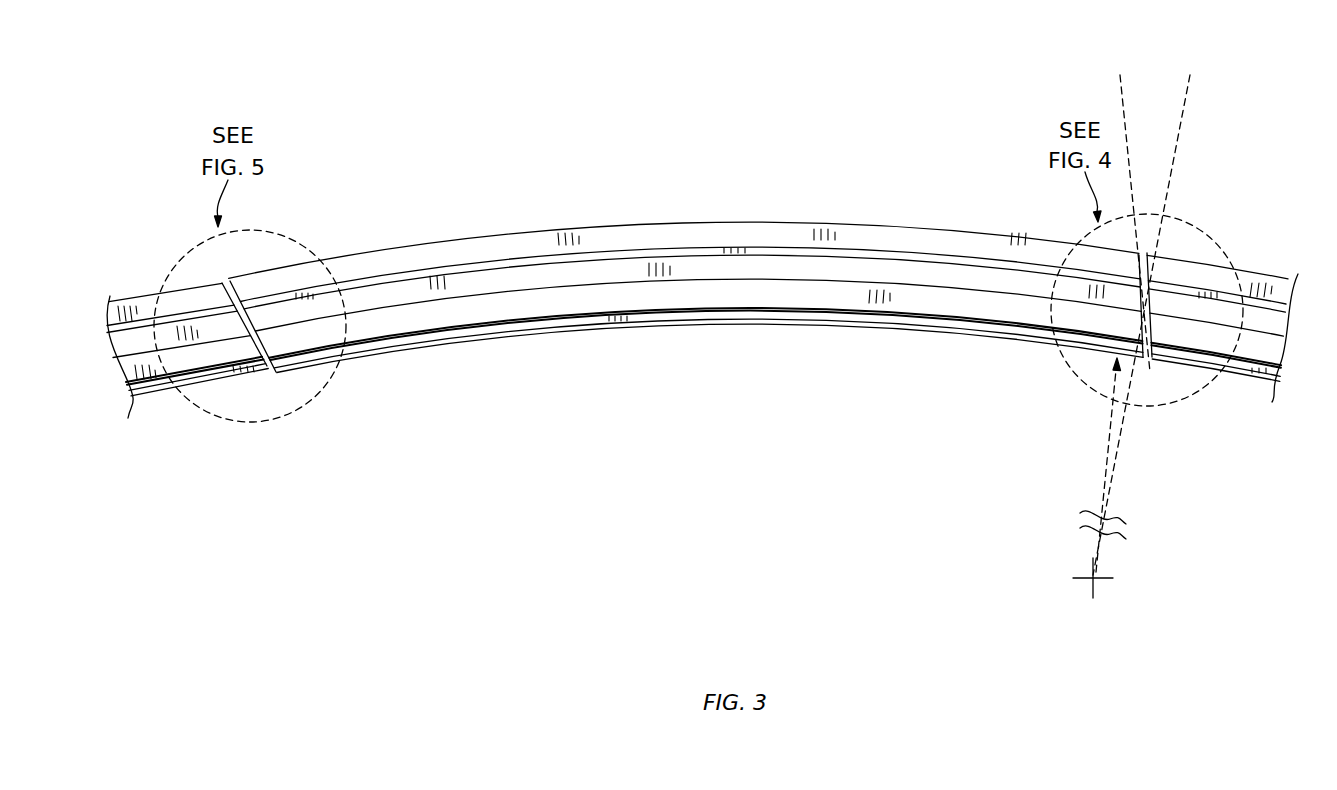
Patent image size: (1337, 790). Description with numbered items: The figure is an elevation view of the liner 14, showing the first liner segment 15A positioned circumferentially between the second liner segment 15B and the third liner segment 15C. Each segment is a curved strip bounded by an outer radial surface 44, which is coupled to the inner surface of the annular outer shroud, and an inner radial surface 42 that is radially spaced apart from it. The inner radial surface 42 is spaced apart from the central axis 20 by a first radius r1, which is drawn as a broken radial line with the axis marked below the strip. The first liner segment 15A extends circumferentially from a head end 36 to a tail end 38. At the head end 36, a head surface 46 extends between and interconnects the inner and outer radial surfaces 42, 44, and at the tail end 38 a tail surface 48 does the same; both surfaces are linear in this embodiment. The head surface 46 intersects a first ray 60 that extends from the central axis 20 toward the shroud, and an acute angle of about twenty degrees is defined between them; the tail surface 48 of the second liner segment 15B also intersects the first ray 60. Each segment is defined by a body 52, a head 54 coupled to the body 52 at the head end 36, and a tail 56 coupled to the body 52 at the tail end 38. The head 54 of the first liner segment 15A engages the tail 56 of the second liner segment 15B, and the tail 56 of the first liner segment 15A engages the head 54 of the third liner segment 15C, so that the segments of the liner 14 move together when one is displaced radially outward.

The curved strip assembly 14 is at (701, 259).
The first liner segment 15A is at (707, 213).
The second liner segment 15B is at (1278, 262).
The third liner segment 15C is at (135, 290).
The outer radial surface 44 is at (144, 292).
The tail surface 48 is at (243, 308).
The body 52 is at (730, 270).
The tail 56 is at (262, 315).
The head surface 46 is at (272, 345).
The inner radial surface 42 is at (165, 395).
The head end 36 is at (228, 388).
The tail end 38 is at (287, 372).
The head 54 is at (237, 330).
The central axis 20 is at (1097, 581).
The first ray 60 is at (1118, 495).
The first radius r1 is at (1112, 440).